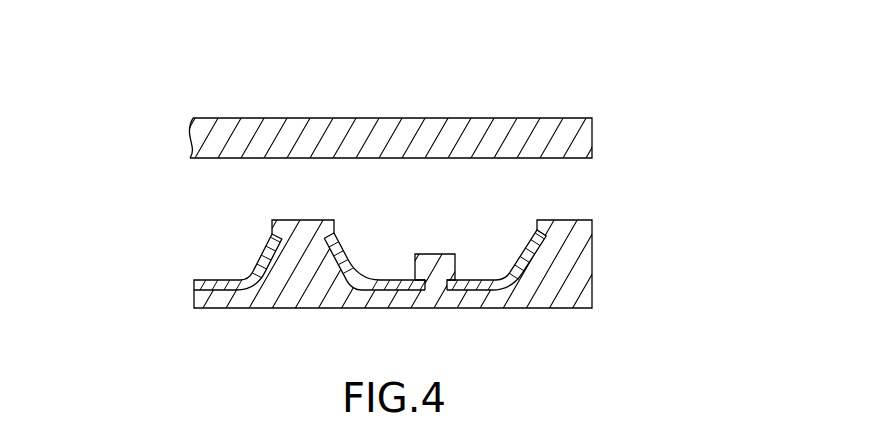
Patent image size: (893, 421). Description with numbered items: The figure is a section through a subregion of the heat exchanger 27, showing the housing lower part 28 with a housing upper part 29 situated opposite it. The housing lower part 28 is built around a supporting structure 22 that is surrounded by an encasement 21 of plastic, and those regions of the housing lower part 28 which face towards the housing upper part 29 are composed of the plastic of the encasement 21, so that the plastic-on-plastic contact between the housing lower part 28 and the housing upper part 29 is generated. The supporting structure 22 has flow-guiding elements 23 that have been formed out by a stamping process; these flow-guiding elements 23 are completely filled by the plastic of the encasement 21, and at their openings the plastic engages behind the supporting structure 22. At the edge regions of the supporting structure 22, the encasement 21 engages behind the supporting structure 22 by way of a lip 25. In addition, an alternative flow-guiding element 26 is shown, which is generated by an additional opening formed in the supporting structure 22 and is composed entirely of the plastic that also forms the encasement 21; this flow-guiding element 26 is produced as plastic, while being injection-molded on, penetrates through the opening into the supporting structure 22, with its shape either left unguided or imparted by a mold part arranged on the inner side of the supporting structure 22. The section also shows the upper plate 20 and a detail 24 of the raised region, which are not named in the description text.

The upper mold half / plate 20 is at (465, 130).
The encasement 21 is at (568, 278).
The supporting structure 22 is at (472, 285).
The flow-guiding elements 23 is at (518, 282).
The raised ridge 24 is at (335, 226).
The lip 25 is at (542, 232).
The flow-guiding element 26 is at (432, 262).
The heat exchanger 27 is at (622, 221).
The housing lower part 28 is at (192, 297).
The housing upper part 29 is at (188, 128).